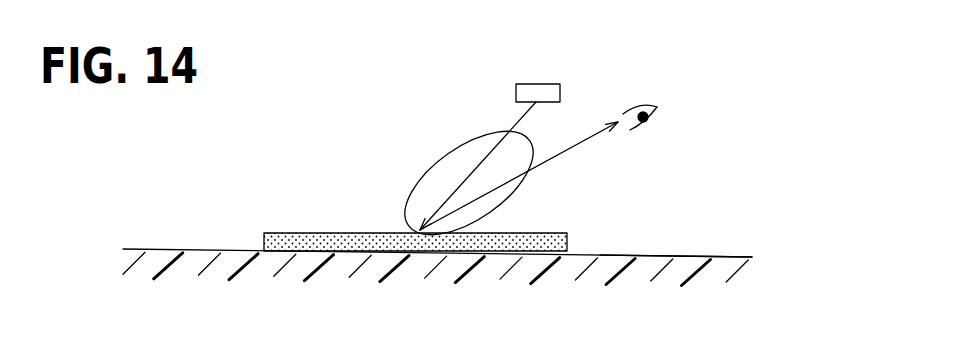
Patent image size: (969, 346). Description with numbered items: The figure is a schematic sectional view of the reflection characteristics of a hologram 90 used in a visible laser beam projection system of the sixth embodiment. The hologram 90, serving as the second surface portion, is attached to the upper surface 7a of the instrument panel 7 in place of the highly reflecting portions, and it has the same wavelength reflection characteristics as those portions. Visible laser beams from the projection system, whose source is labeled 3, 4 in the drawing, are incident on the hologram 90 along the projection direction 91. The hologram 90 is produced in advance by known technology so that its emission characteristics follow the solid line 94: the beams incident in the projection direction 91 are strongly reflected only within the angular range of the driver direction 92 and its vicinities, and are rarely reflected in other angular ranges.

The light source 3 is at (582, 80).
The light detector 4 is at (560, 93).
The instrument panel 7 is at (162, 260).
The upper surface 7a is at (695, 257).
The hologram 90 is at (287, 238).
The projection direction 91 is at (519, 119).
The driver direction 92 is at (580, 144).
The solid line 94 is at (517, 195).